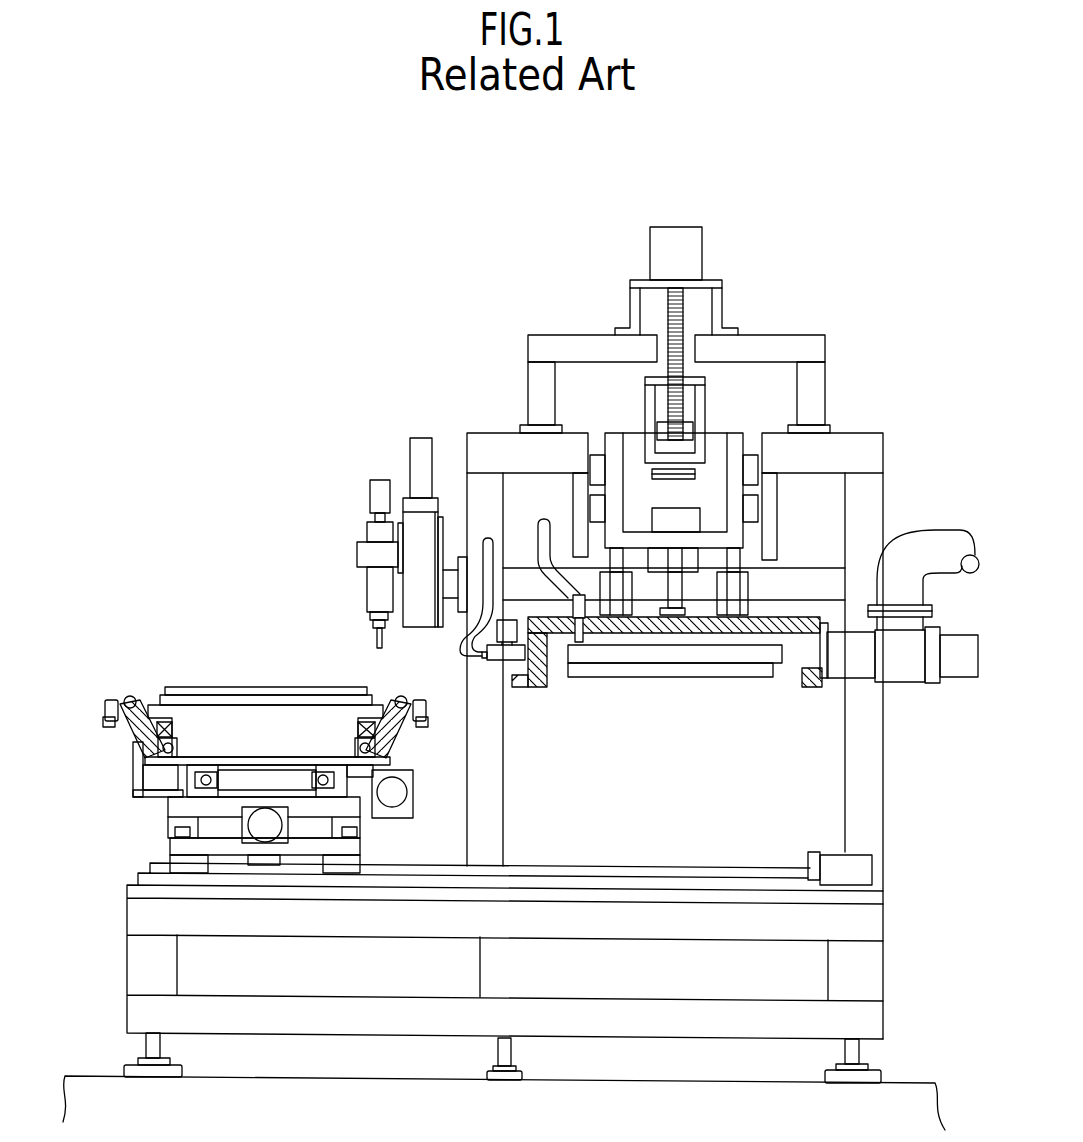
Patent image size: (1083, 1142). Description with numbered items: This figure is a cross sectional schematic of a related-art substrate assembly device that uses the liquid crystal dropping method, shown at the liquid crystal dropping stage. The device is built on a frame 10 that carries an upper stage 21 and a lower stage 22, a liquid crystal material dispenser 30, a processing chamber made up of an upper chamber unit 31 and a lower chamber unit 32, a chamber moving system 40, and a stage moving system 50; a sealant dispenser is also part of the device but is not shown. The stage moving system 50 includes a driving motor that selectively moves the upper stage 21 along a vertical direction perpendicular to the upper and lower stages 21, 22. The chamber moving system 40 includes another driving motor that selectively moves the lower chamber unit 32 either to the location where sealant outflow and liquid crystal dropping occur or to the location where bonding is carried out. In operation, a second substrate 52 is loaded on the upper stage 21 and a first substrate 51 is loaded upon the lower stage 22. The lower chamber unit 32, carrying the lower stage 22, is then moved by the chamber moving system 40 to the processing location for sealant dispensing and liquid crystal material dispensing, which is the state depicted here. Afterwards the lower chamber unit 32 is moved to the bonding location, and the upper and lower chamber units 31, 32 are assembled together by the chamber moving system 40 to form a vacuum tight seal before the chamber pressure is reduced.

The frame 10 is at (870, 778).
The upper stage 21 is at (677, 655).
The lower stage 22 is at (202, 720).
The liquid crystal material dispenser 30 is at (350, 572).
The upper chamber unit 31 is at (555, 627).
The lower chamber unit 32 is at (127, 742).
The chamber moving system 40 is at (863, 867).
The stage moving system 50 is at (690, 522).
The first substrate 51 is at (255, 687).
The second substrate 52 is at (745, 672).